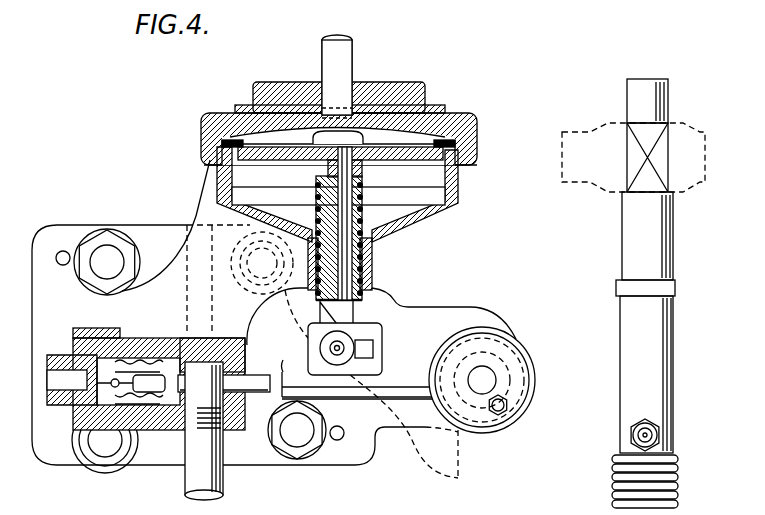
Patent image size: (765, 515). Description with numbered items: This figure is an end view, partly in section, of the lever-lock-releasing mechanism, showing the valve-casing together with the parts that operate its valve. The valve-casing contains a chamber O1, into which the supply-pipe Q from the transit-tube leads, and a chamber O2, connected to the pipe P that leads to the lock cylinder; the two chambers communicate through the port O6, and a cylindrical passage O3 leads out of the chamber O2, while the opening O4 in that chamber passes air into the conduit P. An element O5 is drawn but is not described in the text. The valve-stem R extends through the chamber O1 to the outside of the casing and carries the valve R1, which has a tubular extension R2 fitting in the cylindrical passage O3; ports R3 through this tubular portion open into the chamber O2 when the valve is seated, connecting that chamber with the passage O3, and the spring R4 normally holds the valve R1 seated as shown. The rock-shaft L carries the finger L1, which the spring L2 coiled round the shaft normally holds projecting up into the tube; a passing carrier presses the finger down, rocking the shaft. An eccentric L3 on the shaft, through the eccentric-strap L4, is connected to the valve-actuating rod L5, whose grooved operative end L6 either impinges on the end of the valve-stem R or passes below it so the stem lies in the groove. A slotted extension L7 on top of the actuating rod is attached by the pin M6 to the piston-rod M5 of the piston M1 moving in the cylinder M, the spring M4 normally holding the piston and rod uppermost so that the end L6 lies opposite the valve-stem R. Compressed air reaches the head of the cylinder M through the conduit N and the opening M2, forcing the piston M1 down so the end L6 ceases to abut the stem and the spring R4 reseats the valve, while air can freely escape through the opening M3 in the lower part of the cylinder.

The pipe or conduit N is at (337, 75).
The opening M2 is at (312, 108).
The piston M1 is at (368, 172).
The cylinder M is at (338, 198).
The opening M3 is at (418, 235).
The spring M4 is at (366, 220).
The piston-rod M5 is at (374, 268).
The pin M6 is at (382, 290).
The rock-shaft L is at (478, 372).
The finger L1 is at (481, 229).
The spring L2 is at (612, 492).
The eccentric L3 is at (526, 358).
The eccentric-strap L4 is at (536, 402).
The valve-actuating rod L5 is at (357, 384).
The operative end of valve-actuating rod L6 is at (282, 359).
The slotted extension L7 is at (383, 333).
The chamber O1 is at (256, 357).
The chamber O2 is at (143, 345).
The cylindrical passage O3 is at (72, 380).
The opening O4 is at (158, 345).
The port O5 is at (176, 440).
The port O6 is at (173, 321).
The pipe P is at (70, 360).
The supply-pipe Q is at (204, 431).
The valve-stem R is at (168, 384).
The valve R1 is at (200, 345).
The tubular extension R2 is at (106, 332).
The ports R3 is at (80, 420).
The spring R4 is at (132, 345).